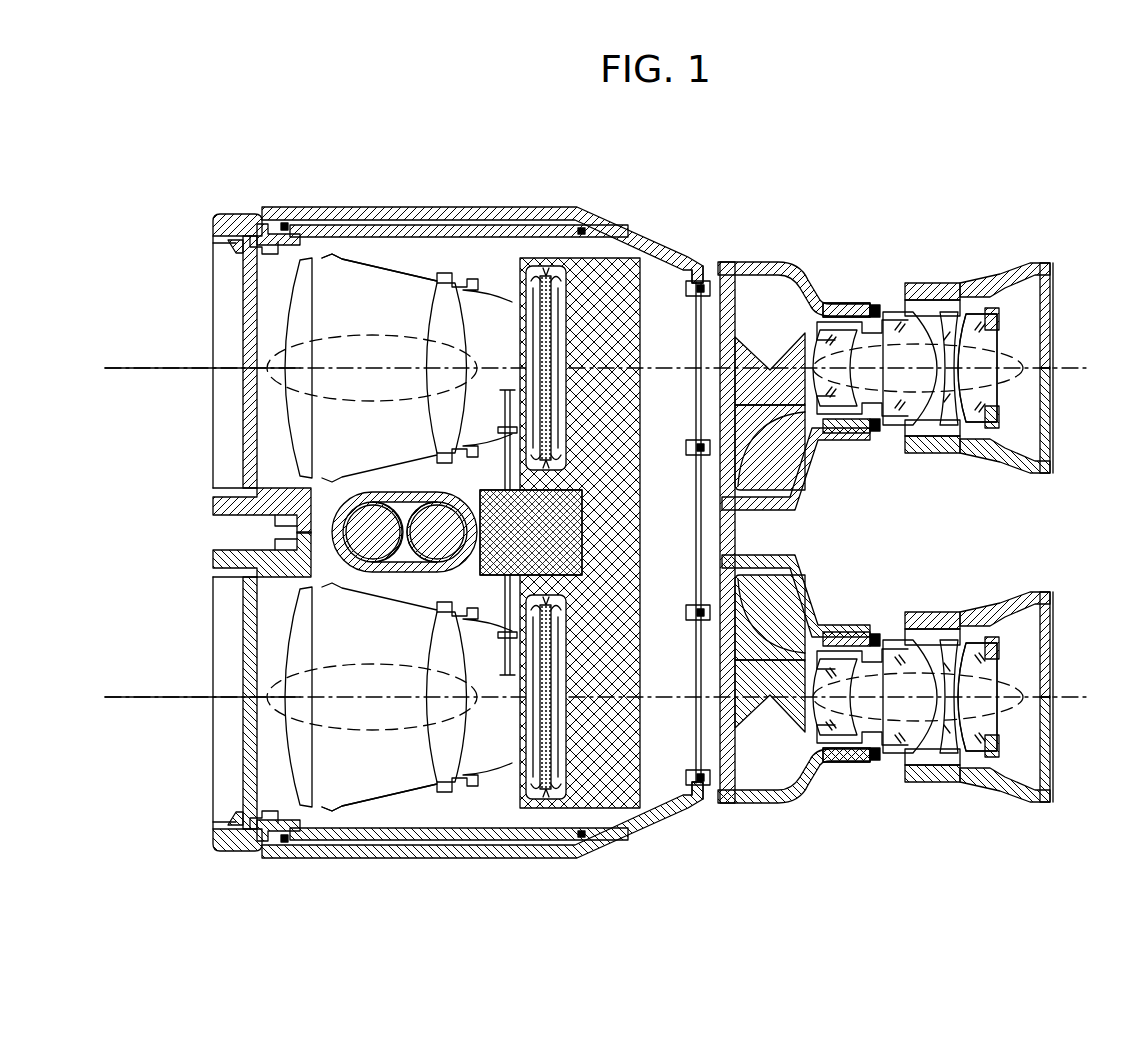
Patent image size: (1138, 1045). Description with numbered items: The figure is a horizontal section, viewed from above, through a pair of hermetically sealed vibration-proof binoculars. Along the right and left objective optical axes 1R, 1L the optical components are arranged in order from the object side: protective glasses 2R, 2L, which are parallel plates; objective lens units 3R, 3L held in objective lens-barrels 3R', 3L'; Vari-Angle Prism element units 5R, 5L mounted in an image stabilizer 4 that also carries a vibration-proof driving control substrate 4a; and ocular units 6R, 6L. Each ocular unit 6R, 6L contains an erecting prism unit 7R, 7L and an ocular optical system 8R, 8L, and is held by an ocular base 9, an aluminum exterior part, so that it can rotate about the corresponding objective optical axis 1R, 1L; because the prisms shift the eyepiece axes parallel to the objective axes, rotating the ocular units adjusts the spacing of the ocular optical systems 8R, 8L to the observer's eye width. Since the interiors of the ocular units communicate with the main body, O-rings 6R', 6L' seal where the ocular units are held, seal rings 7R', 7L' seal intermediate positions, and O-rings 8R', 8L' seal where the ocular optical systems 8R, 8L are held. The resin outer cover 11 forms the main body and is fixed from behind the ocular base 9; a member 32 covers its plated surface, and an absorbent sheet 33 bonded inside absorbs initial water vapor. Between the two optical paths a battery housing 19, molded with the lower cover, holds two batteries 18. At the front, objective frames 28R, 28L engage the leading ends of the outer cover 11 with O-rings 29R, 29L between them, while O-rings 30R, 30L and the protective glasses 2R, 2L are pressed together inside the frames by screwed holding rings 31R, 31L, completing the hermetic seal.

The right objective optical axis 1R is at (162, 367).
The left objective optical axis 1L is at (165, 695).
The right protective glass 2R is at (247, 349).
The left protective glass 2L is at (247, 724).
The right objective lens unit 3R is at (312, 368).
The left objective lens unit 3L is at (307, 697).
The right objective lens-barrel 3R' is at (397, 221).
The left objective lens-barrel 3L' is at (382, 858).
The image stabilizer 4 is at (621, 256).
The vibration-proof driving control substrate 4a is at (582, 490).
The right VAP element unit 5R is at (522, 298).
The left VAP element unit 5L is at (523, 738).
The right ocular unit 6R is at (900, 312).
The left ocular unit 6L is at (896, 761).
The right ocular unit O-ring 6R' is at (713, 223).
The left ocular unit O-ring 6L' is at (689, 835).
The right erecting prism unit 7R is at (780, 359).
The left erecting prism unit 7L is at (779, 714).
The right seal ring 7R' is at (794, 358).
The left seal ring 7L' is at (794, 713).
The right ocular optical system 8R is at (1026, 352).
The left ocular optical system 8L is at (1030, 730).
The right ocular optical system O-ring 8R' is at (863, 281).
The left ocular optical system O-ring 8L' is at (846, 790).
The ocular base 9 is at (712, 546).
The outer cover 11 is at (340, 222).
The battery 18 is at (338, 552).
The battery housing 19 is at (336, 513).
The right objective frame 28R is at (258, 226).
The left objective frame 28L is at (260, 848).
The right objective frame O-ring 29R is at (287, 224).
The left objective frame O-ring 29L is at (287, 857).
The right protective glass O-ring 30R is at (257, 220).
The left protective glass O-ring 30L is at (248, 847).
The right holding ring 31R is at (236, 250).
The left holding ring 31L is at (240, 818).
The covering member 32 is at (218, 224).
The absorbent sheet 33 is at (502, 432).